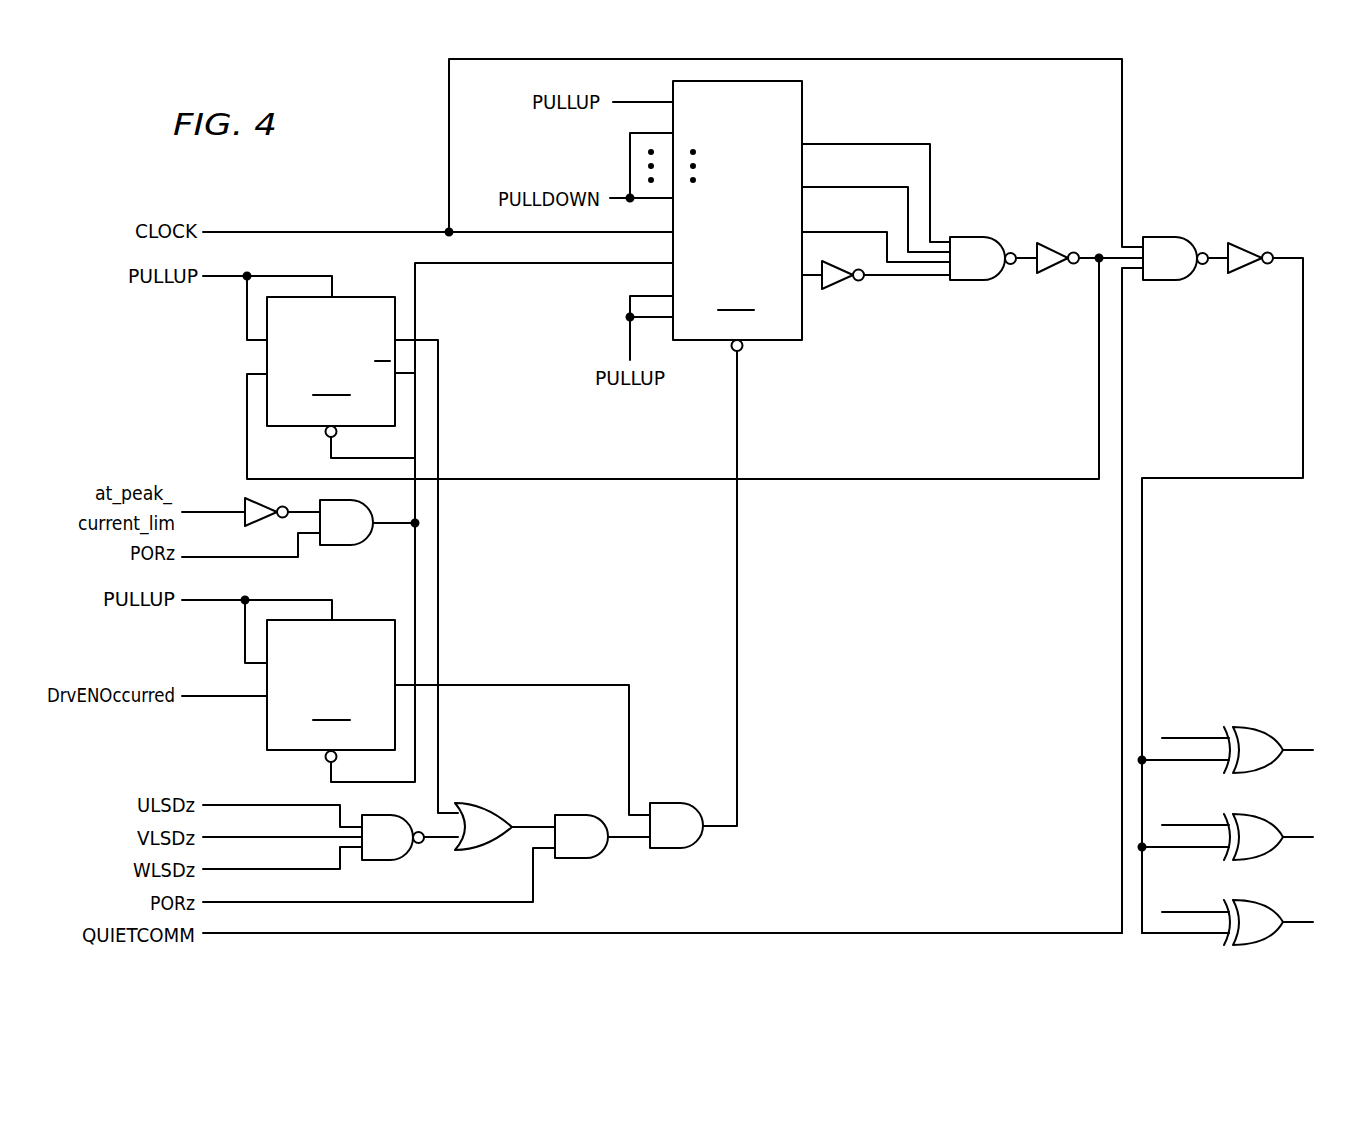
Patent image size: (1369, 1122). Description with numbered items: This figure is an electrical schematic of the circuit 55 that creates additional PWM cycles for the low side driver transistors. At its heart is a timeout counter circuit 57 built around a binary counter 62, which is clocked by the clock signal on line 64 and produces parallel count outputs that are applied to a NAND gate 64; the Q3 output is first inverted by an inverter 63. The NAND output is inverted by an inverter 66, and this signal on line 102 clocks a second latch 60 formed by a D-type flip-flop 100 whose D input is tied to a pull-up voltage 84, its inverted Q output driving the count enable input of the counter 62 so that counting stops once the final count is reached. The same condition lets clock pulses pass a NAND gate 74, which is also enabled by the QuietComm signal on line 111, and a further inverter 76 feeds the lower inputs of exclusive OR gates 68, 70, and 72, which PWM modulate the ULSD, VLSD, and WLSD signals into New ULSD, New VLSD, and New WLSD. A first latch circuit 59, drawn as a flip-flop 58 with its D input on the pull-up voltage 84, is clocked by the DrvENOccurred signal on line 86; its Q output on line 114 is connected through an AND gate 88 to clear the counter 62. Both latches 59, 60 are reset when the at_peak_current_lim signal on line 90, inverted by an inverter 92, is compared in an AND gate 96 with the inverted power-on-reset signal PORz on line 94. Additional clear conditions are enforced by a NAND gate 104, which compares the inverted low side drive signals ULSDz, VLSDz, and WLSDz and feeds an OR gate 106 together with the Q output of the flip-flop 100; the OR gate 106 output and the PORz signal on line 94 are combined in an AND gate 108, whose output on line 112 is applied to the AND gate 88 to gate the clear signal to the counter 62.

The circuit 55 is at (1013, 160).
The timeout counter circuit 57 is at (826, 368).
The D flip-flop 58 is at (363, 618).
The first latch circuit 59 is at (176, 667).
The second latch 60 is at (206, 367).
The binary counter 62 is at (804, 116).
The inverter 63 is at (838, 290).
The NAND gate 64 is at (320, 230).
The inverter 66 is at (1058, 247).
The exclusive OR gate 68 is at (1275, 732).
The exclusive OR gate 70 is at (1275, 819).
The exclusive OR gate 72 is at (1275, 905).
The NAND gate 74 is at (1166, 236).
The inverter 76 is at (1252, 246).
The pull-up voltage 84 is at (240, 285).
The line 86 is at (222, 702).
The AND gate 88 is at (670, 800).
The line 90 is at (213, 510).
The inverter 92 is at (244, 525).
The line 94 is at (252, 560).
The AND gate 96 is at (342, 556).
The D-type flip-flop 100 is at (362, 284).
The line 102 is at (918, 482).
The NAND gate 104 is at (412, 862).
The OR gate 106 is at (498, 803).
The AND gate 108 is at (580, 814).
The line 111 is at (940, 930).
The line 112 is at (628, 840).
The line 114 is at (536, 684).